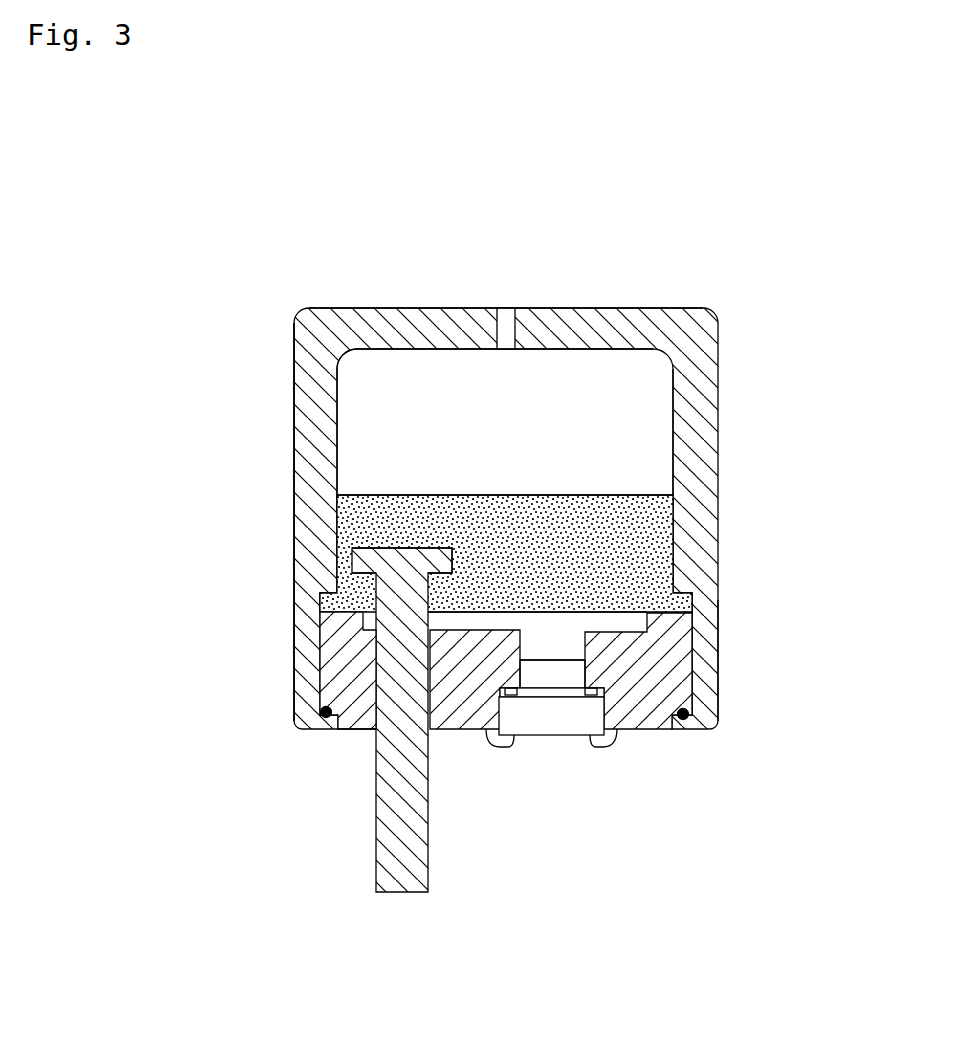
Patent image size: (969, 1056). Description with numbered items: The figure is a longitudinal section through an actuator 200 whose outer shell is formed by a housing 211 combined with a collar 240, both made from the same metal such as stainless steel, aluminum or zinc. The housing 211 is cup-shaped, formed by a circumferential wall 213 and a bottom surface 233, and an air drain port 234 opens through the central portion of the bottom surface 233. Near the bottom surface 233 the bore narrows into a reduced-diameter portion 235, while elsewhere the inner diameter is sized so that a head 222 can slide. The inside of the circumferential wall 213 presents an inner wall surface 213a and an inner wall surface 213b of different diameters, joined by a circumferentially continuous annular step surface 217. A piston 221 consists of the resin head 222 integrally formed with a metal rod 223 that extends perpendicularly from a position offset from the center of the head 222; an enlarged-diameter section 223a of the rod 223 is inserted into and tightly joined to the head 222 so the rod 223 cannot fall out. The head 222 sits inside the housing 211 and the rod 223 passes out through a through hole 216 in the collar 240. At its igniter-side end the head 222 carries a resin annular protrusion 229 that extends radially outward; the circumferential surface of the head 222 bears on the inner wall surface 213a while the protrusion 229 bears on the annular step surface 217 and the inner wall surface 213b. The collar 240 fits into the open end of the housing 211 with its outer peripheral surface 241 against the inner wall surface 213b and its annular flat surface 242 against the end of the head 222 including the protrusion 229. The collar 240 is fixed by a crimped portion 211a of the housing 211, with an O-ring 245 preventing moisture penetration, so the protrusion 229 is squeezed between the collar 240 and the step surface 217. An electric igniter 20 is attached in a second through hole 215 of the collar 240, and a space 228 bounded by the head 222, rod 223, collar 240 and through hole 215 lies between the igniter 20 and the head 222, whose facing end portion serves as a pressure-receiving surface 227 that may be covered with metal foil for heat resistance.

The actuator 200 is at (587, 282).
The housing 211 is at (722, 378).
The crimped portion 211a is at (683, 733).
The circumferential wall 213 is at (308, 405).
The inner wall surface 213a is at (662, 428).
The inner wall surface 213b is at (683, 660).
The through hole 215 is at (585, 745).
The through hole 216 is at (375, 732).
The annular step surface 217 is at (317, 607).
The electric igniter 20 is at (570, 723).
The piston 221 is at (547, 493).
The head 222 is at (483, 510).
The rod 223 is at (393, 853).
The enlarged-diameter section 223a is at (365, 557).
The pressure-receiving surface 227 is at (497, 613).
The space 228 is at (543, 647).
The resin annular protrusion 229 is at (693, 605).
The bottom surface 233 is at (390, 308).
The air drain port 234 is at (507, 308).
The reduced-diameter portion 235 is at (342, 368).
The collar 240 is at (643, 720).
The outer peripheral surface 241 is at (318, 660).
The annular flat surface 242 is at (673, 603).
The O-ring 245 is at (318, 713).